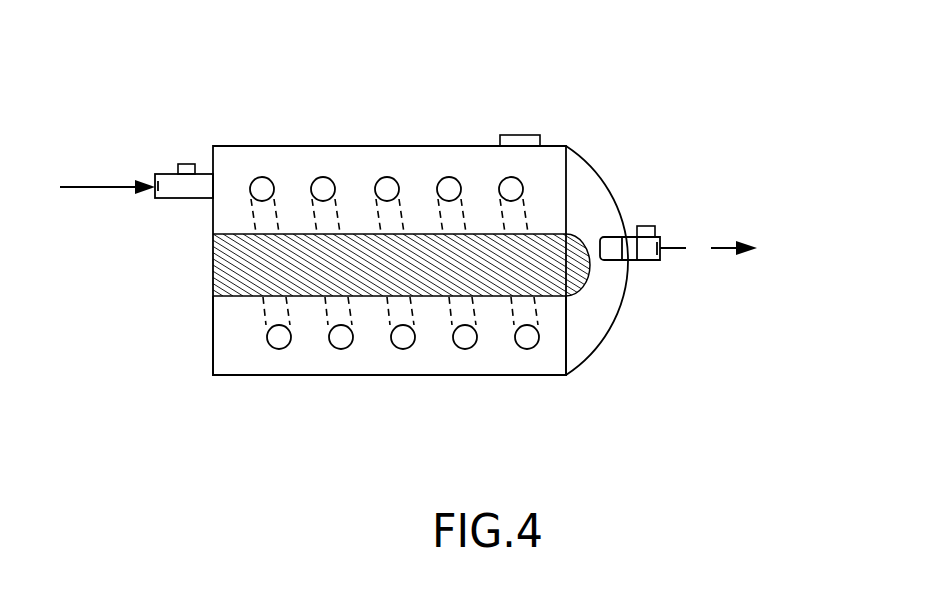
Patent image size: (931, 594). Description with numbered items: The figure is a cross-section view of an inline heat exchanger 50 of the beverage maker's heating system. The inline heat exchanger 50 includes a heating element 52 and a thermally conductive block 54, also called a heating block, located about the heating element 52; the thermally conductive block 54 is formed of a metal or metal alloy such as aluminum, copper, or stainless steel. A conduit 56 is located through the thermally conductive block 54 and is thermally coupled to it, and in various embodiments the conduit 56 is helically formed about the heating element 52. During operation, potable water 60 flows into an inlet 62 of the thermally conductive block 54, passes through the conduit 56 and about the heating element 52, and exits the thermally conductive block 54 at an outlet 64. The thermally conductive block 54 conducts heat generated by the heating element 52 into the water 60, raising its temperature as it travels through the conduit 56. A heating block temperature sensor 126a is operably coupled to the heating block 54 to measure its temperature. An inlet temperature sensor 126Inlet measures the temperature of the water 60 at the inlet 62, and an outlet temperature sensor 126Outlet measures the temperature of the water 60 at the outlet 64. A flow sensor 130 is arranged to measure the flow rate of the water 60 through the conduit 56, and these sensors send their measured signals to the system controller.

The inline heat exchanger 50 is at (608, 120).
The heating element 52 is at (240, 257).
The thermally conductive block 54 is at (235, 346).
The conduit 56 is at (342, 341).
The water 60 is at (397, 210).
The inlet 62 is at (213, 178).
The outlet 64 is at (603, 258).
The inlet temperature sensor 126Inlet is at (185, 166).
The heating block temperature sensor 126a is at (517, 135).
The outlet temperature sensor 126Outlet is at (645, 226).
The flow sensor 130 is at (627, 249).